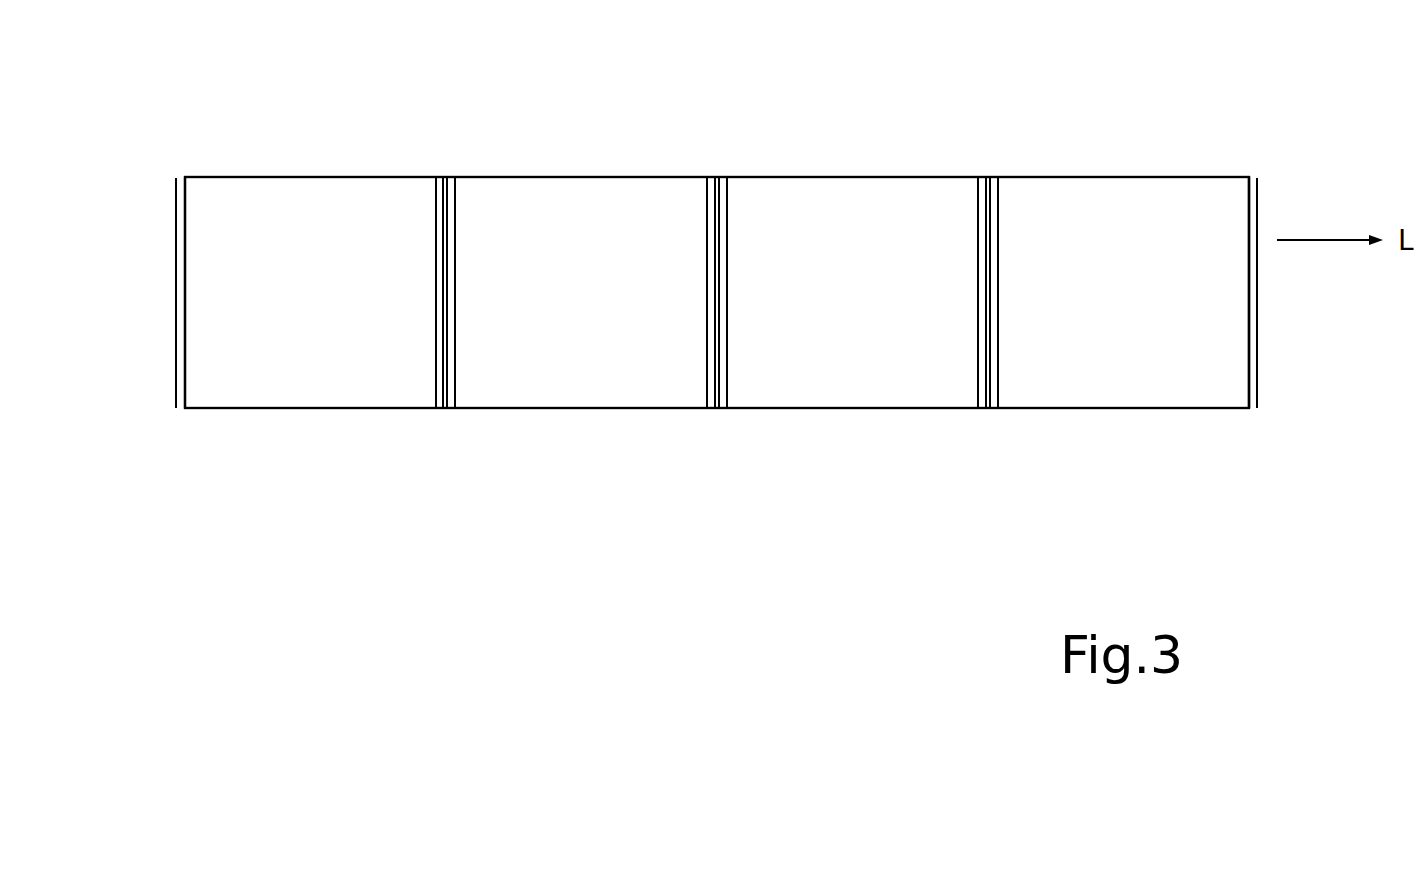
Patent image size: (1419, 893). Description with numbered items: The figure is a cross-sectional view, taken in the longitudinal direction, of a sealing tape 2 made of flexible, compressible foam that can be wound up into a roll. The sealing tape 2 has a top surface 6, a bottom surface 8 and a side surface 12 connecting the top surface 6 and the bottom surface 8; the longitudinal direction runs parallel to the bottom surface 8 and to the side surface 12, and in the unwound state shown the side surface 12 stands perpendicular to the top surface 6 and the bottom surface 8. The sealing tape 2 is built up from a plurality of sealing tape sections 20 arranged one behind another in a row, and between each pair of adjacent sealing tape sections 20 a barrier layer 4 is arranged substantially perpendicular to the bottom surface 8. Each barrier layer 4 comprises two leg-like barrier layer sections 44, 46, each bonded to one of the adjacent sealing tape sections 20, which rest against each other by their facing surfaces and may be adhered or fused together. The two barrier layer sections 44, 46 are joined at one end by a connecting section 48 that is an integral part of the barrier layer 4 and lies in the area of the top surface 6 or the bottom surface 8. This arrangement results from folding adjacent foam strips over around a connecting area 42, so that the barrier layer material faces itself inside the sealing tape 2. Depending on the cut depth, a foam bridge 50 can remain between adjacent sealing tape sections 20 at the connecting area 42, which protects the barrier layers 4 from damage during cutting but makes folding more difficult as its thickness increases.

The sealing tape 2 is at (1305, 90).
The barrier layer 4 is at (175, 382).
The top surface 6 is at (1133, 177).
The bottom surface 8 is at (1162, 408).
The side surface 12 is at (1177, 220).
The sealing tape section 20 is at (277, 367).
The connecting area 42 is at (448, 163).
The barrier layer section 44 is at (442, 347).
The barrier layer section 46 is at (450, 362).
The connecting section 48 is at (440, 174).
The foam bridge 50 is at (453, 175).